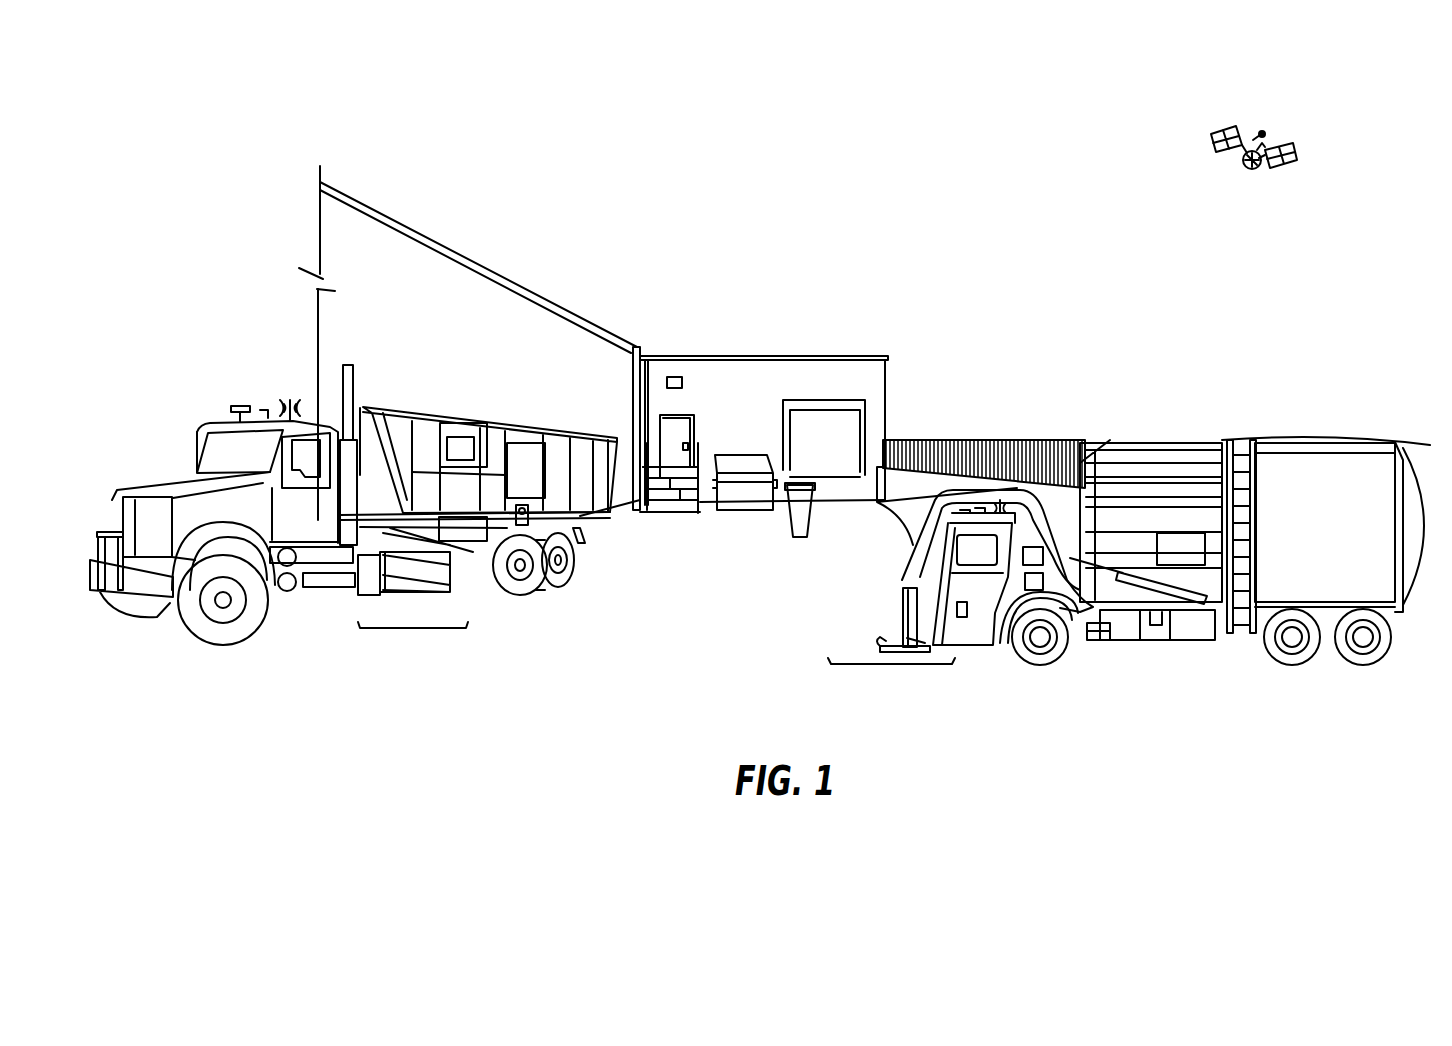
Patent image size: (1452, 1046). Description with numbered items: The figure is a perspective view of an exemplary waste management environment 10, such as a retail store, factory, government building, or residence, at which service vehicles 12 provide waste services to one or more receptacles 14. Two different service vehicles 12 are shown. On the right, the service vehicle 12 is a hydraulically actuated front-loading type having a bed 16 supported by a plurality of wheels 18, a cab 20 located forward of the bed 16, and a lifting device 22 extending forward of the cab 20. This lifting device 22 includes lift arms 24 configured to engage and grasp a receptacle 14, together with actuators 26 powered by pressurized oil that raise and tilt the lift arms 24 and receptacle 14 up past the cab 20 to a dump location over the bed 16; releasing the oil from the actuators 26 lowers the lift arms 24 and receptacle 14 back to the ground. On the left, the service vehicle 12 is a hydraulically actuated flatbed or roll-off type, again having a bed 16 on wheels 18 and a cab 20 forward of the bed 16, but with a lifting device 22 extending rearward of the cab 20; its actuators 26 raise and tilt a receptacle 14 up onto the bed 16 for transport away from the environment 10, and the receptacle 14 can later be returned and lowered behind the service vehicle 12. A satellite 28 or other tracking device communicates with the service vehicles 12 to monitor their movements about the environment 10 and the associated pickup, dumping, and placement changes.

The waste management environment 10 is at (784, 316).
The service vehicle 12 is at (760, 529).
The receptacle 14 is at (745, 540).
The bed 16 is at (1336, 550).
The wheels 18 is at (238, 645).
The cab 20 is at (320, 467).
The lifting device 22 is at (413, 630).
The lift arms 24 is at (923, 552).
The actuators 26 is at (410, 583).
The satellite 28 is at (1240, 168).